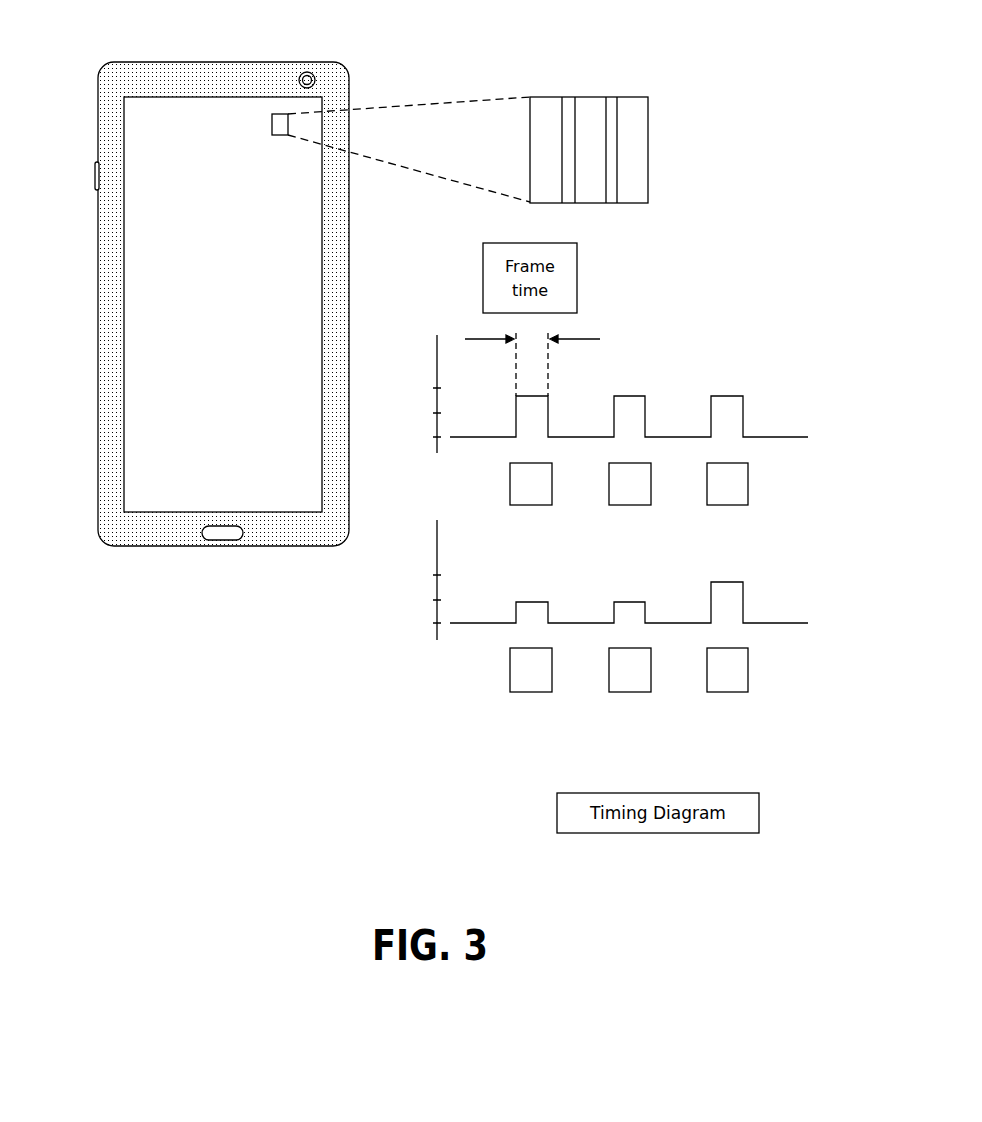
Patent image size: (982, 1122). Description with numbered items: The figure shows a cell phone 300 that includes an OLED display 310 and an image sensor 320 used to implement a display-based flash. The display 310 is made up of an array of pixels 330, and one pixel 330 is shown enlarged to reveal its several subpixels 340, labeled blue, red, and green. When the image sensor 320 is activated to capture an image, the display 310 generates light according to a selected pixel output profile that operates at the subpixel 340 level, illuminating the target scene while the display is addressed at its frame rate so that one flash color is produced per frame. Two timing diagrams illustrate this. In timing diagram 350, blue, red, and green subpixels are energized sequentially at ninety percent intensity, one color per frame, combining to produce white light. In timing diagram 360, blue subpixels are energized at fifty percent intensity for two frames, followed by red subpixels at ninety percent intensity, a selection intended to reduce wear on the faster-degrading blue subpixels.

The cell phone 300 is at (222, 317).
The OLED display 310 is at (131, 125).
The image sensor 320 is at (311, 72).
The pixel 330 is at (281, 135).
The subpixel 340 is at (530, 89).
The timing diagram 350 is at (822, 355).
The timing diagram 360 is at (822, 545).